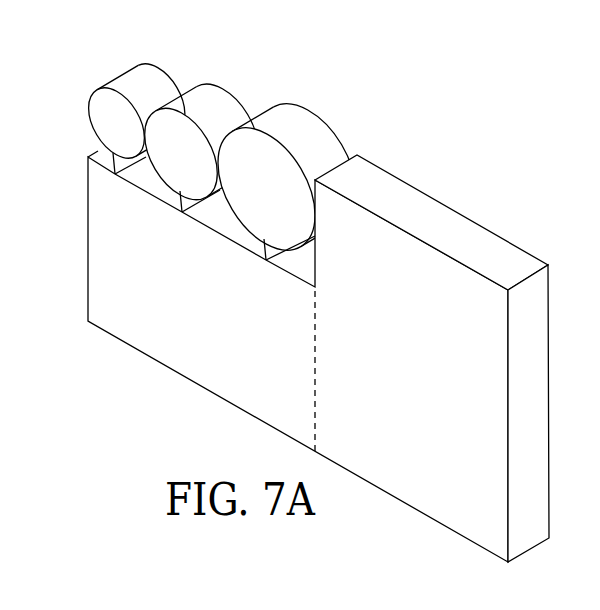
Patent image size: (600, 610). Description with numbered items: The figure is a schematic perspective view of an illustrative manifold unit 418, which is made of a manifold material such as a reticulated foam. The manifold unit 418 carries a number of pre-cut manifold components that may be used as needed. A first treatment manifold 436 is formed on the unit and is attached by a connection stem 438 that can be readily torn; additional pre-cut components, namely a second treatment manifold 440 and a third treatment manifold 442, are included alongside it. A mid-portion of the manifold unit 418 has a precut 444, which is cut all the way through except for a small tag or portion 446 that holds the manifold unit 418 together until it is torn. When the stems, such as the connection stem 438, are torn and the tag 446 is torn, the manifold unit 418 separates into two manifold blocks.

The manifold unit 418 is at (467, 209).
The first treatment manifold 436 is at (154, 66).
The connection stem 438 is at (92, 150).
The second treatment manifold 440 is at (219, 83).
The third treatment manifold 442 is at (304, 104).
The precut 444 is at (285, 387).
The tag 446 is at (306, 347).